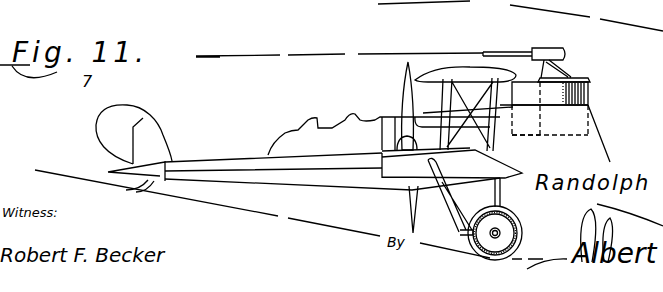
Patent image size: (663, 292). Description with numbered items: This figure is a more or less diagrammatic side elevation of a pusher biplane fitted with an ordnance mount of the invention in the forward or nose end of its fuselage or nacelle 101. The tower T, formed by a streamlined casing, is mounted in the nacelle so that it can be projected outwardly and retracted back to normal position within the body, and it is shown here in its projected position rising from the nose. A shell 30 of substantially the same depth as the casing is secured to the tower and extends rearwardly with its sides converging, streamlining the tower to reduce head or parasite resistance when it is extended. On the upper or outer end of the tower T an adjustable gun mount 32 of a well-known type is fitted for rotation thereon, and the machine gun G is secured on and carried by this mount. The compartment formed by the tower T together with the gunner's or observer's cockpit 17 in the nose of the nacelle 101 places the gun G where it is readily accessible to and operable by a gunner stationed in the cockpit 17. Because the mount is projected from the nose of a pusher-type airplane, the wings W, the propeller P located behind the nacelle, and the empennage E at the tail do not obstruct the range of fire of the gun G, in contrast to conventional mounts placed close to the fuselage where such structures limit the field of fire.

The empennage E is at (153, 132).
The propeller P is at (402, 80).
The wings W is at (440, 70).
The machine gun G is at (516, 52).
The adjustable gun mount 32 is at (562, 71).
The tower T is at (587, 90).
The gunner's or observer's cockpit 17 is at (588, 105).
The fuselage or nacelle 101 is at (593, 135).
The shell 30 is at (517, 135).